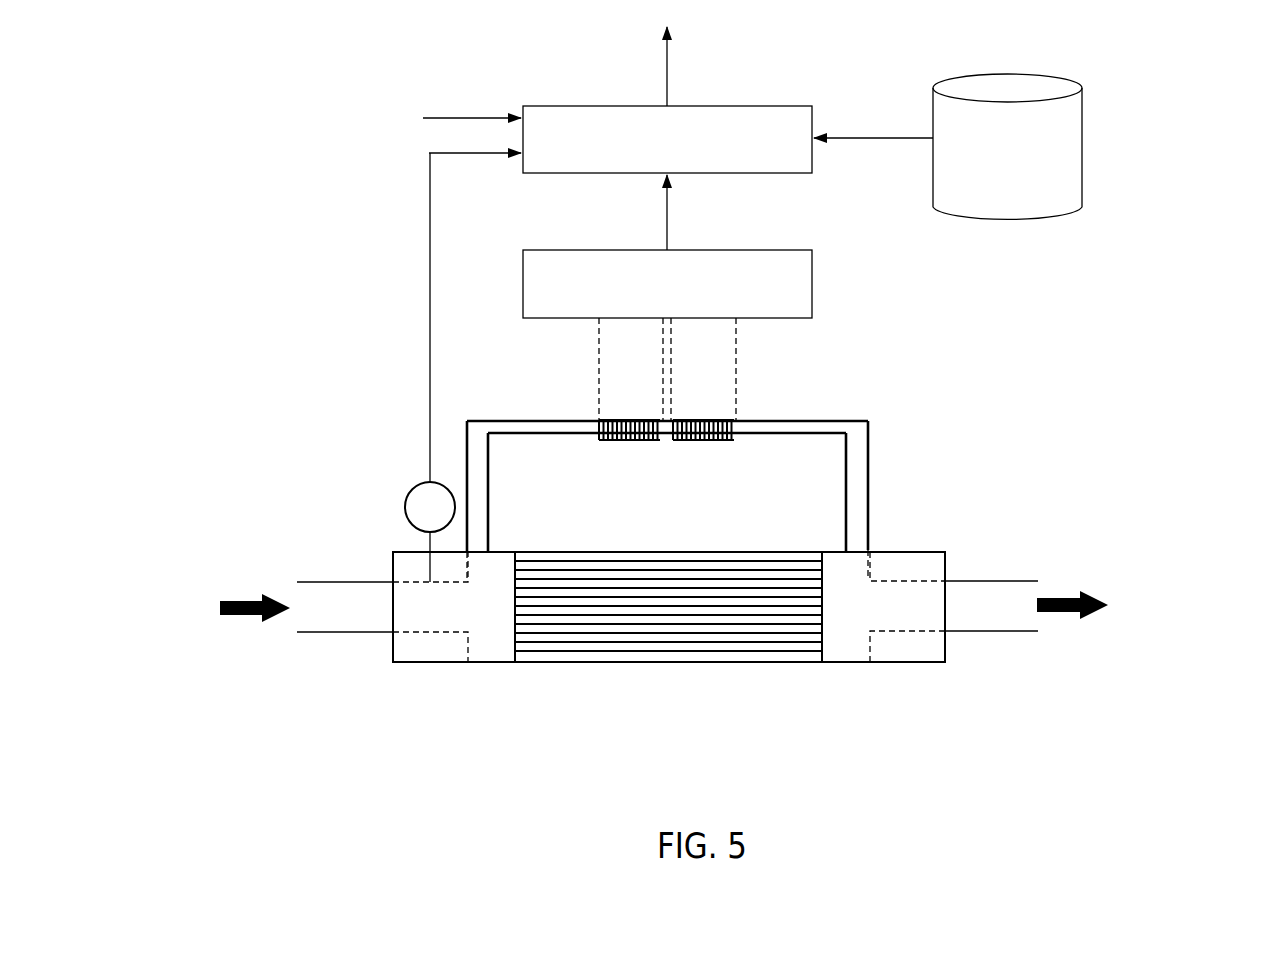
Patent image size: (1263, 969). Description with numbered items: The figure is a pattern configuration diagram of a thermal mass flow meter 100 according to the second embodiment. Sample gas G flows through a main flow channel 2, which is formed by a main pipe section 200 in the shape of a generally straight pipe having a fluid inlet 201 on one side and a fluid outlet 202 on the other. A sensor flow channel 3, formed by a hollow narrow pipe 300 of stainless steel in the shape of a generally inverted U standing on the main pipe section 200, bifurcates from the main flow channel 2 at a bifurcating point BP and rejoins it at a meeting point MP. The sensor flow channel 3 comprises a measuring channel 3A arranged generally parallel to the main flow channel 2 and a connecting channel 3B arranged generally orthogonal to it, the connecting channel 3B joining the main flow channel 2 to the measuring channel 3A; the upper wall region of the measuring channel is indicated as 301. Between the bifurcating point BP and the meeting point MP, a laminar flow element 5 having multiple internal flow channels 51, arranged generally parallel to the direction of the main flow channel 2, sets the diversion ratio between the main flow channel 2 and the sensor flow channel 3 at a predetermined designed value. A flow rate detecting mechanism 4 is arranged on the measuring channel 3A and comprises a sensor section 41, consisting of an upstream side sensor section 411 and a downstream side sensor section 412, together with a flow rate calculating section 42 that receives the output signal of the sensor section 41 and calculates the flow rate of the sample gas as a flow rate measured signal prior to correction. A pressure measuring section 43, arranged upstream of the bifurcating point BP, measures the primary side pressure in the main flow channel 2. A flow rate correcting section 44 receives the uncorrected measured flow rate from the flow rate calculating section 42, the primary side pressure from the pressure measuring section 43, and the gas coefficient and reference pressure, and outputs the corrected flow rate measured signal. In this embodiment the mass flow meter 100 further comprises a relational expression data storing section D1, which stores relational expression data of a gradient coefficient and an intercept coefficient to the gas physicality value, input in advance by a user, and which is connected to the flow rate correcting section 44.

The mass flow meter 100 is at (352, 72).
The flow rate detecting mechanism 4 is at (936, 41).
The flow rate correcting section 44 is at (812, 112).
The flow rate calculating section 42 is at (812, 285).
The relational expression data storing section D1 is at (1082, 147).
The pressure measuring section 43 is at (405, 507).
The sensor flow channel 3 is at (664, 451).
The measuring channel 3A is at (661, 392).
The connecting channel 3B is at (465, 468).
The housing top wall 301 is at (587, 421).
The hollow narrow pipe 300 is at (868, 432).
The sensor section 41 is at (714, 448).
The upstream side sensor section 411 is at (632, 452).
The downstream side sensor section 412 is at (705, 450).
The bifurcating point BP is at (480, 548).
The meeting point MP is at (860, 546).
The main flow channel 2 is at (669, 647).
The main pipe section 200 is at (497, 662).
The fluid inlet 201 is at (291, 586).
The fluid outlet 202 is at (1047, 586).
The laminar flow element 5 is at (668, 644).
The internal flow channels 51 is at (658, 618).